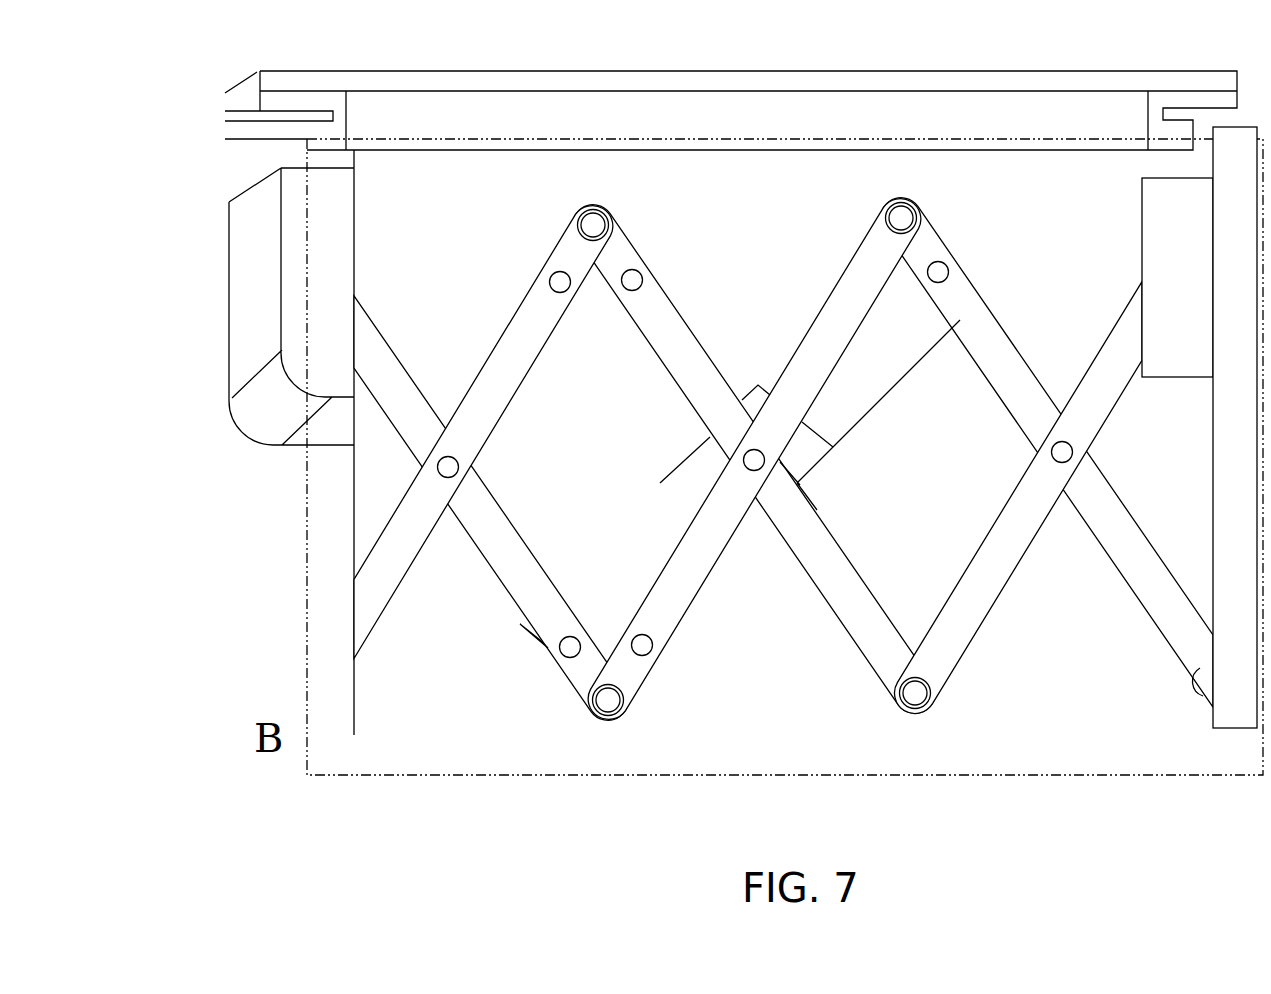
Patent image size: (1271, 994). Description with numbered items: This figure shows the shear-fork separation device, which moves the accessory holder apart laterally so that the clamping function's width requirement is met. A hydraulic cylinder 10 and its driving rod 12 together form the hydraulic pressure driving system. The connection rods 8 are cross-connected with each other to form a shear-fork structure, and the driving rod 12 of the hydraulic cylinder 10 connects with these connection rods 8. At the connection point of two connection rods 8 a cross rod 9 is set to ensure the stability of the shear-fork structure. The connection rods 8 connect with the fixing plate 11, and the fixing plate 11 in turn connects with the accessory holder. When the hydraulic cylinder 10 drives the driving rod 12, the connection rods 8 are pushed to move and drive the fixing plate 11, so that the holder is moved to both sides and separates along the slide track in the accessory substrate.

The connection rods 8 is at (1152, 603).
The cross rod 9 is at (450, 493).
The hydraulic cylinder 10 is at (642, 587).
The fixing plate 11 is at (1227, 608).
The driving rod of the hydraulic cylinder 12 is at (875, 343).